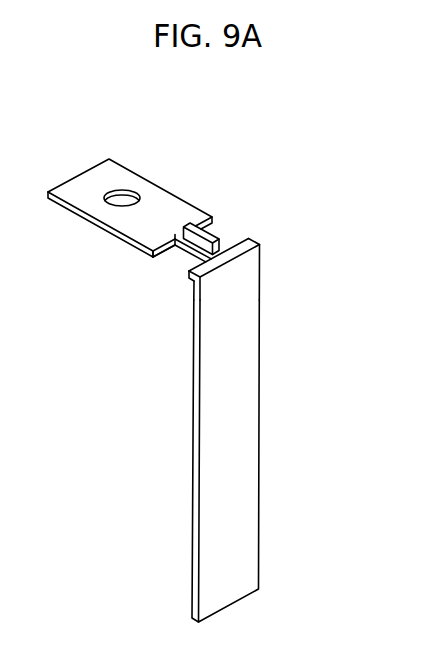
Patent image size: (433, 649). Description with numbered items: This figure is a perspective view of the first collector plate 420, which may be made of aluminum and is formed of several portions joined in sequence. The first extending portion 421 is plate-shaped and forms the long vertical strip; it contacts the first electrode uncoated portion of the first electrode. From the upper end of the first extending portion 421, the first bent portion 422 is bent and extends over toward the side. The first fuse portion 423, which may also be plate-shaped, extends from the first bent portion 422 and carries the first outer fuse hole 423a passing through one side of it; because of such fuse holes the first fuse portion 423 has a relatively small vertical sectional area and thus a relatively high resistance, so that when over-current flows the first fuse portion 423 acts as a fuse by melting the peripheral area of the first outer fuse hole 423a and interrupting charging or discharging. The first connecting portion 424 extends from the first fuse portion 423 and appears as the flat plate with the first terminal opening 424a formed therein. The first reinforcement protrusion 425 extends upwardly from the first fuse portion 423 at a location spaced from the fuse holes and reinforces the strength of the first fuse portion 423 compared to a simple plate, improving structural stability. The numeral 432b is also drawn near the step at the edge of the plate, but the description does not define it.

The first collector plate 420 is at (313, 225).
The first extending portion 421 is at (255, 372).
The first bent portion 422 is at (237, 258).
The first fuse portion 423 is at (224, 248).
The first outer fuse hole 423a is at (243, 232).
The first connecting portion 424 is at (87, 180).
The first terminal opening 424a is at (122, 191).
The first reinforcement protrusion 425 is at (192, 222).
The notch 432b is at (162, 257).